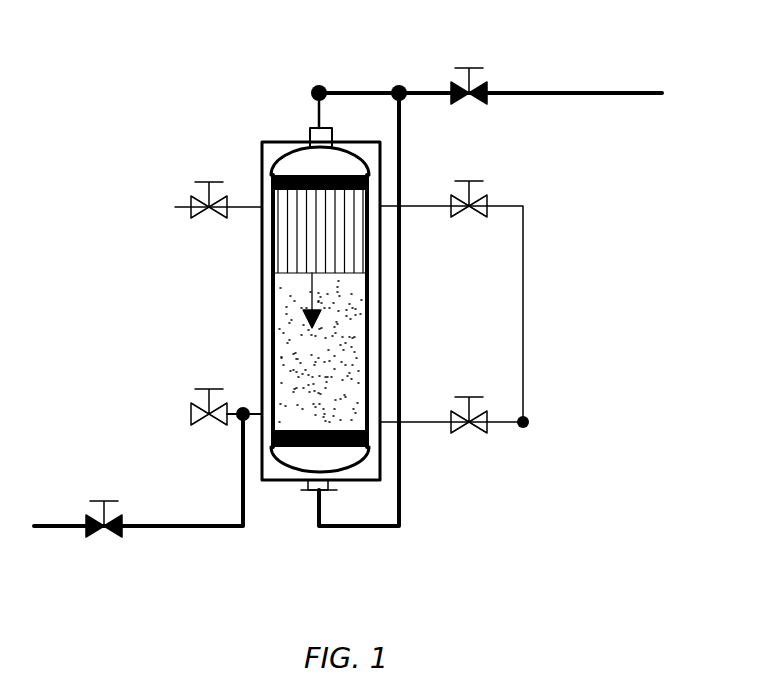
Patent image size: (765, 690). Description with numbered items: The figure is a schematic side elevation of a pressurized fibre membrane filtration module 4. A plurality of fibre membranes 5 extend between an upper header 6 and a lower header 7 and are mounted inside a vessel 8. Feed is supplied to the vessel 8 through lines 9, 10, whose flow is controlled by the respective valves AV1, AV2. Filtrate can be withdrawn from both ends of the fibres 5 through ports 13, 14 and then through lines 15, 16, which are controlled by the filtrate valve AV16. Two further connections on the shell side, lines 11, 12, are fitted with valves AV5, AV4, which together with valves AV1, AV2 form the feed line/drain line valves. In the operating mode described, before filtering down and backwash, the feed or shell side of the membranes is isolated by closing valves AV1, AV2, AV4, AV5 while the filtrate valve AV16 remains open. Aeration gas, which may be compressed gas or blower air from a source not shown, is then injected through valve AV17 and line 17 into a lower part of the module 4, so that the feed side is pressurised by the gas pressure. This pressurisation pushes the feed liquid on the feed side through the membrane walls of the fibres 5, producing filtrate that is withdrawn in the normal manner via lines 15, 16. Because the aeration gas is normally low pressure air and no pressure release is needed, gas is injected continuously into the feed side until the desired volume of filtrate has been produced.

The membrane filtration module 4 is at (273, 272).
The fibre membranes 5 is at (338, 250).
The upper header 6 is at (274, 172).
The lower header 7 is at (347, 447).
The vessel 8 is at (262, 142).
The feed line 9 is at (252, 407).
The feed line 10 is at (249, 206).
The upper outlet line 11 is at (428, 206).
The lower outlet line 12 is at (423, 422).
The port 13 is at (310, 128).
The port 14 is at (307, 487).
The filtrate line 15 is at (359, 93).
The filtrate line 16 is at (400, 370).
The aeration gas line 17 is at (172, 528).
The feed valve AV1 is at (208, 422).
The feed valve AV2 is at (208, 215).
The drain line valve AV4 is at (467, 435).
The drain line valve AV5 is at (467, 217).
The filtrate valve AV16 is at (478, 106).
The aeration gas valve AV17 is at (93, 540).